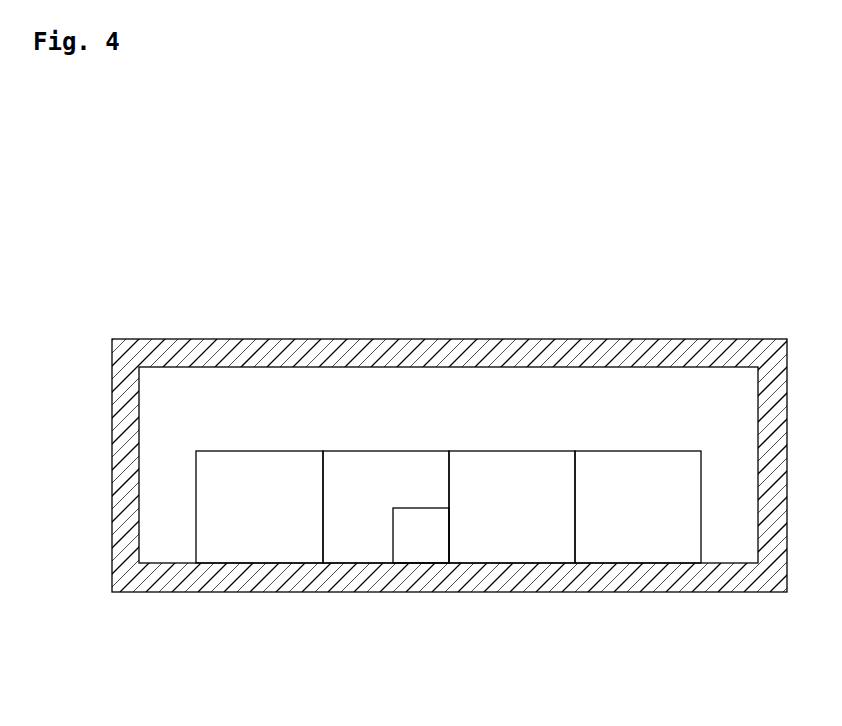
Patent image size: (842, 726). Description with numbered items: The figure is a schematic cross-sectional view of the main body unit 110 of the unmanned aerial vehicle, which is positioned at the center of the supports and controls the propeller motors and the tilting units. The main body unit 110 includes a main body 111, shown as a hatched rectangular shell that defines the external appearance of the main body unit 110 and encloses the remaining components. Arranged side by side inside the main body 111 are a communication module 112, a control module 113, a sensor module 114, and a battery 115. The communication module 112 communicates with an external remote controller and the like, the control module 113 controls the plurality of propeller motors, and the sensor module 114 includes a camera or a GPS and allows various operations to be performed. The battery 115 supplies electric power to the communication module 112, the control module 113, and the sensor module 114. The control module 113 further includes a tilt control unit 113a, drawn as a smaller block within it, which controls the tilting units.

The main body unit 110 is at (514, 262).
The main body 111 is at (593, 343).
The communication module 112 is at (272, 543).
The control module 113 is at (363, 540).
The tilt control unit 113a is at (432, 540).
The sensor module 114 is at (524, 540).
The battery 115 is at (667, 540).